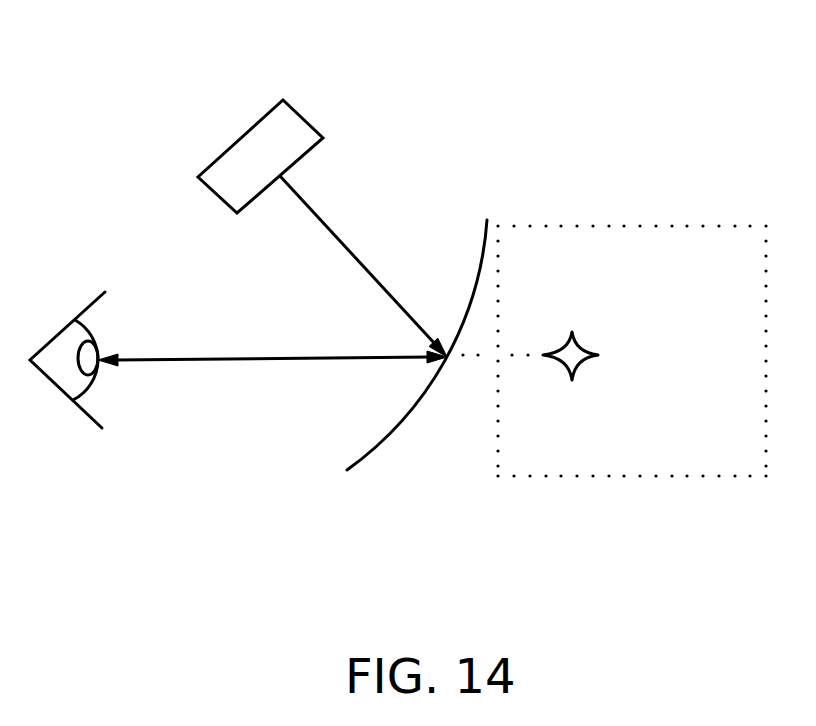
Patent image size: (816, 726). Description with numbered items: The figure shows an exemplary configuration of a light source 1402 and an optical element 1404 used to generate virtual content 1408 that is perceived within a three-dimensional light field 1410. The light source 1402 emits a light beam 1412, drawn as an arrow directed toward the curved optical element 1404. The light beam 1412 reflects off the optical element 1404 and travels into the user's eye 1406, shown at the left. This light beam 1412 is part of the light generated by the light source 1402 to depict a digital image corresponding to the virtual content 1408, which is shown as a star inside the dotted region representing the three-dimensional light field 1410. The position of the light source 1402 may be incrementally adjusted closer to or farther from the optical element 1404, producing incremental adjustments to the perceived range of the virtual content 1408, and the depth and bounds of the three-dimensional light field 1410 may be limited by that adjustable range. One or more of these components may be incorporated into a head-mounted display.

The light source 1402 is at (298, 112).
The optical element 1404 is at (407, 418).
The user's eye 1406 is at (88, 346).
The virtual content 1408 is at (572, 332).
The three-dimensional light field 1410 is at (598, 227).
The light beam 1412 is at (323, 218).